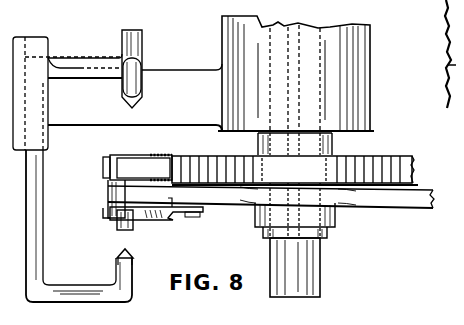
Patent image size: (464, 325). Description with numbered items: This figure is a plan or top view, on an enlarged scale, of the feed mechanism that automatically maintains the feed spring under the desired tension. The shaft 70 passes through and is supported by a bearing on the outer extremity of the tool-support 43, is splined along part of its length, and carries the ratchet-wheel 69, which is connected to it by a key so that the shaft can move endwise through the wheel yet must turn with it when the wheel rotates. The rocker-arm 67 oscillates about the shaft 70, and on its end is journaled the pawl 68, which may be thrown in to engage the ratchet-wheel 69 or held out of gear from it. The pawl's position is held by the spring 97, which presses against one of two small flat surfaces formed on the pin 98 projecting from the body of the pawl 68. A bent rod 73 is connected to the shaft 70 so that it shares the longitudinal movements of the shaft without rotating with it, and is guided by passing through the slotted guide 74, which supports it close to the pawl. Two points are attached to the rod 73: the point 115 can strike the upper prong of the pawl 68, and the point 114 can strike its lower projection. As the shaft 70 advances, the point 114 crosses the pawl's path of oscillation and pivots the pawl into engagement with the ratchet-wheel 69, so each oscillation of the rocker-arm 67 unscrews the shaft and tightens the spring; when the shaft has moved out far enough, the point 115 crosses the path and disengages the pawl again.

The tool-support 43 is at (296, 73).
The rocker-arm 67 is at (108, 199).
The pawl 68 is at (137, 167).
The ratchet-wheel 69 is at (339, 240).
The shaft 70 is at (319, 296).
The rod 73 is at (70, 61).
The slotted guide 74 is at (20, 41).
The spring 97 is at (168, 222).
The pin 98 is at (126, 230).
The point 114 is at (118, 257).
The point 115 is at (142, 103).